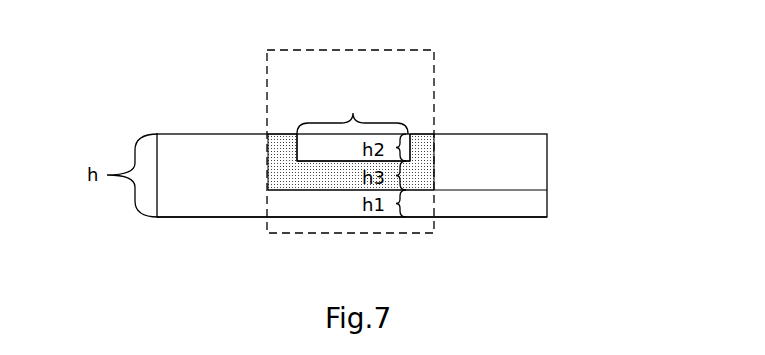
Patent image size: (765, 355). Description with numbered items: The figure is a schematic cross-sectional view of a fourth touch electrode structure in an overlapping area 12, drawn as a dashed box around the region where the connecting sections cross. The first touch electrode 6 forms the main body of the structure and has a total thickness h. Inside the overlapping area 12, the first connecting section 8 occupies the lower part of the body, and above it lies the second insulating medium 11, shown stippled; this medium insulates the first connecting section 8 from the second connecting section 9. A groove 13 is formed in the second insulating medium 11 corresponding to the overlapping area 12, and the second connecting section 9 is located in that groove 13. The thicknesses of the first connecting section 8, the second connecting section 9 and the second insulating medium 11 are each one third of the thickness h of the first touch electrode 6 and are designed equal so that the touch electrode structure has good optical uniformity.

The first touch electrode 6 is at (530, 182).
The first connecting section 8 is at (446, 199).
The second connecting section 9 is at (352, 134).
The second insulating medium 11 is at (425, 150).
The overlapping area 12 is at (434, 50).
The groove 13 is at (352, 104).